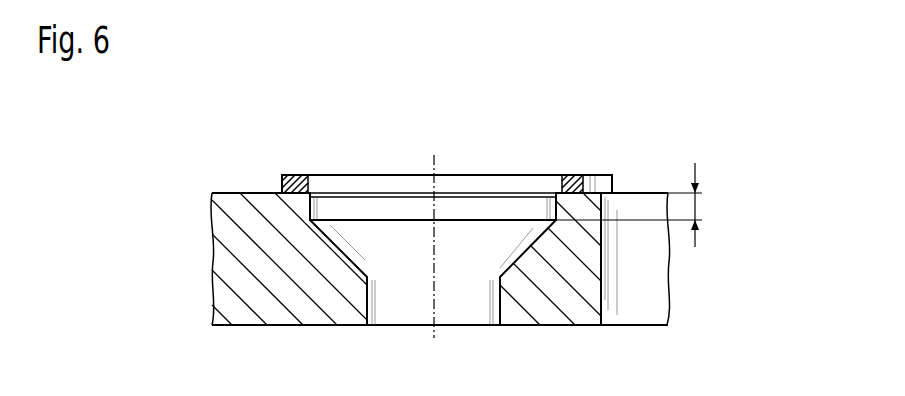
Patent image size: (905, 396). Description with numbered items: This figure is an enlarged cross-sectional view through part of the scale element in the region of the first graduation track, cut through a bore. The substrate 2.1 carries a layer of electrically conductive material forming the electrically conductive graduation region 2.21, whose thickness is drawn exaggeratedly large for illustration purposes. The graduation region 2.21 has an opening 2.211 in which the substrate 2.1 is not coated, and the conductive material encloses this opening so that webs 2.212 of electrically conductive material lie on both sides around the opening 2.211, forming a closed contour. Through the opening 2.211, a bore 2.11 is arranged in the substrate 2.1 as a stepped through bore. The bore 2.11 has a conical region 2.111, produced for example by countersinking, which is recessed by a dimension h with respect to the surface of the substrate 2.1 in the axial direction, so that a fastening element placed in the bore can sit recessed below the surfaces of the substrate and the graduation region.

The substrate 2.1 is at (220, 263).
The electrically conductive graduation region 2.21 is at (259, 169).
The web 2.212 is at (292, 174).
The opening 2.211 is at (385, 180).
The bore 2.11 is at (465, 213).
The conical region 2.111 is at (503, 249).
The dimension h is at (636, 205).